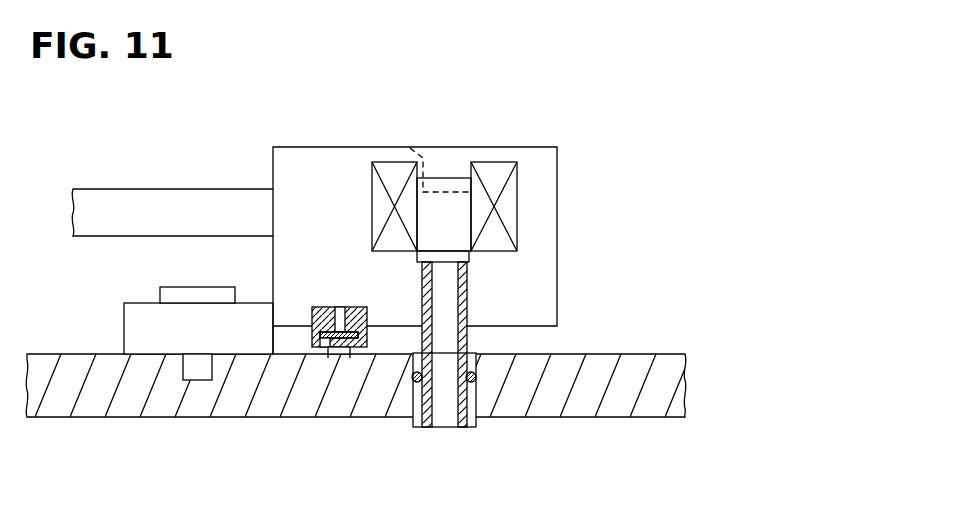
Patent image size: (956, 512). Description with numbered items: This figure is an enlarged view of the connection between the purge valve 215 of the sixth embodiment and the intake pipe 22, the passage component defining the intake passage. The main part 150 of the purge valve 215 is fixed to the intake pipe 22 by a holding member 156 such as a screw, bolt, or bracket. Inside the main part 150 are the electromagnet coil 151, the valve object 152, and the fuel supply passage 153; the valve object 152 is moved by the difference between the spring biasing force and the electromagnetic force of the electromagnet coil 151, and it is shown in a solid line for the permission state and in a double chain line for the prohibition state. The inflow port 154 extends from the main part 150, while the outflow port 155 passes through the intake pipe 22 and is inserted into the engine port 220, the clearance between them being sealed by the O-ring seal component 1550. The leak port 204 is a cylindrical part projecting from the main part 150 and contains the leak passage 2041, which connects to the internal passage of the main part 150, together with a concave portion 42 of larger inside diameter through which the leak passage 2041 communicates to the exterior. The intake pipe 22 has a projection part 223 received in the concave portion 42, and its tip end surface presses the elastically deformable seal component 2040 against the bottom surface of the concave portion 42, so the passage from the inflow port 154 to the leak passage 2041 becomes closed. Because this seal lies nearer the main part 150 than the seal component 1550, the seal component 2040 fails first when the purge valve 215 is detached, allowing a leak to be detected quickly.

The intake pipe 22 is at (63, 354).
The concave portion 42 is at (346, 352).
The main part 150 is at (313, 147).
The electromagnet coil 151 is at (495, 162).
The valve object 152 is at (408, 147).
The fuel supply passage 153 is at (460, 290).
The inflow port 154 is at (192, 189).
The outflow port 155 is at (420, 428).
The holding member 156 is at (172, 287).
The leak port 204 is at (312, 333).
The purge valve 215 is at (567, 151).
The engine port 220 is at (473, 418).
The projection part 223 is at (328, 350).
The seal component 1550 is at (412, 380).
The seal component 2040 is at (340, 338).
The leak passage 2041 is at (337, 316).